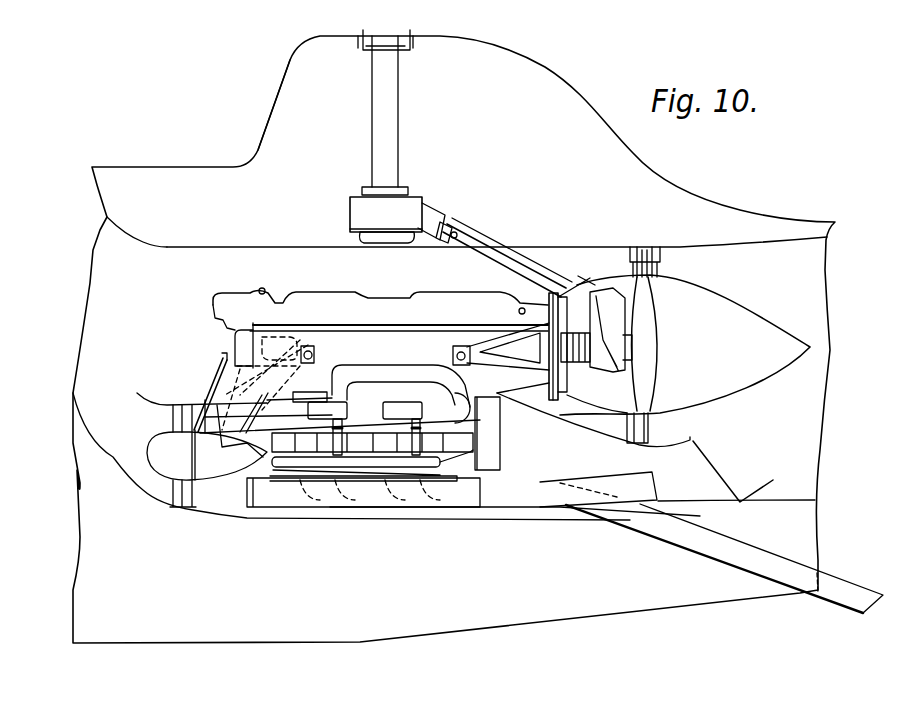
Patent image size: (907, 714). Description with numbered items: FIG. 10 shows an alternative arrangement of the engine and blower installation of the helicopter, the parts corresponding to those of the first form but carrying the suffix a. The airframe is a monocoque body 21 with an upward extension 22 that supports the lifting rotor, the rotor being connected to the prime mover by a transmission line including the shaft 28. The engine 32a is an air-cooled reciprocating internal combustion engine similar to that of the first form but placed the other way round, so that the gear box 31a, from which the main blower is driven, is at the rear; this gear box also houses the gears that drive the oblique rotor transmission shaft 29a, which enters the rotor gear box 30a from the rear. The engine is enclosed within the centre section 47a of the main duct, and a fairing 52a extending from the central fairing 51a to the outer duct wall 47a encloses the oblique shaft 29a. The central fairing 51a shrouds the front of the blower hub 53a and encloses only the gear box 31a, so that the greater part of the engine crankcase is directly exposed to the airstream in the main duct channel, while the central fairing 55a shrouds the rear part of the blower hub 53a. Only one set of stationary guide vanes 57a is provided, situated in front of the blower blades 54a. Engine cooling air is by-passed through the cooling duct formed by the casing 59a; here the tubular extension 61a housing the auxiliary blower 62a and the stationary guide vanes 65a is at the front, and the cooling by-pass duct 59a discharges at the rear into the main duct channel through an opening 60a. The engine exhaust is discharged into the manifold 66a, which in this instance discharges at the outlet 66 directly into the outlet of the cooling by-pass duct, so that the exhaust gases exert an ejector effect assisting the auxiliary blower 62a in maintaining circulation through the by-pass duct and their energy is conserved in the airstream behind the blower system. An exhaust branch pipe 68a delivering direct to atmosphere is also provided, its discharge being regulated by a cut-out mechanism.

The body 21 is at (152, 166).
The upward extension 22 is at (273, 98).
The centre section of the main duct 47a is at (267, 247).
The shaft 28 is at (398, 117).
The rotor gear box 30a is at (390, 214).
The oblique rotor transmission shaft 29a is at (487, 256).
The fairing 52a is at (520, 268).
The stationary guide vanes 57a is at (637, 262).
The blower blades 54a is at (655, 260).
The central fairing 55a is at (737, 310).
The blower hub 53a is at (650, 347).
The engine 32a is at (374, 384).
The gear box 31a is at (607, 350).
The central fairing 51a is at (605, 407).
The casing 59a is at (543, 408).
The tubular extension 61a is at (200, 405).
The stationary guide vanes 65a is at (173, 494).
The auxiliary blower 62a is at (194, 497).
The exhaust manifold 66a is at (440, 498).
The outlet 66 is at (657, 487).
The opening 60a is at (710, 458).
The exhaust branch pipe 68a is at (693, 547).